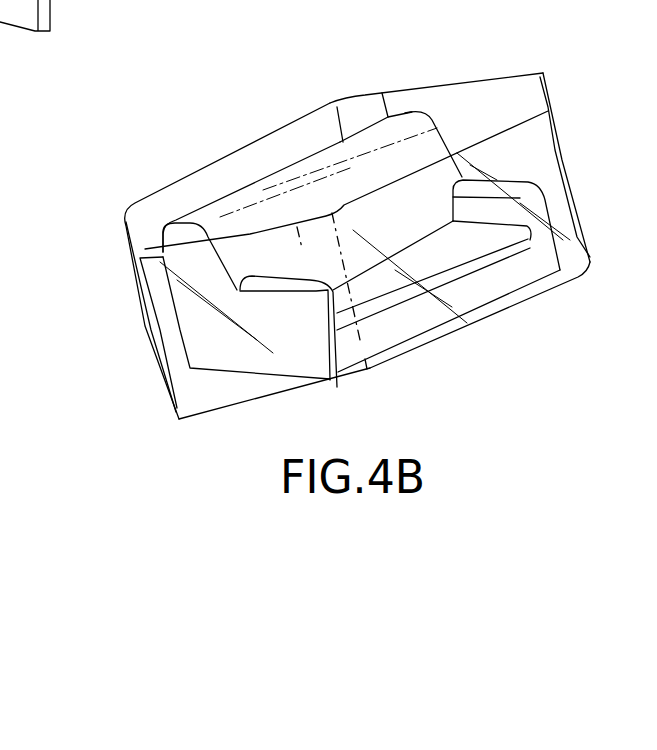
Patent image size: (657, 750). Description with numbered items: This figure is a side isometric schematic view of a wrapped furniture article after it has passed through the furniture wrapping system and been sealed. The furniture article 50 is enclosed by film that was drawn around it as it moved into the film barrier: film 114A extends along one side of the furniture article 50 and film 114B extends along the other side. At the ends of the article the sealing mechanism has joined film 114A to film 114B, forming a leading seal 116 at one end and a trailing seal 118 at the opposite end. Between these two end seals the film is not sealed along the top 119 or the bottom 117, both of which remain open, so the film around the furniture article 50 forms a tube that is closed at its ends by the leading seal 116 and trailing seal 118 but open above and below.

The film 114A is at (540, 147).
The film 114B is at (130, 255).
The leading seal 116 is at (157, 347).
The bottom 117 is at (438, 350).
The trailing seal 118 is at (557, 77).
The top 119 is at (493, 93).
The furniture article 50 is at (483, 278).